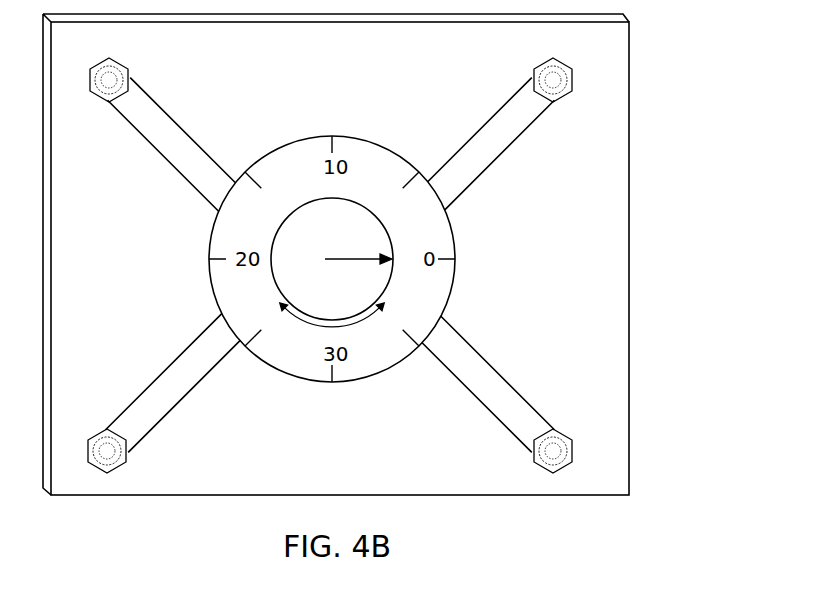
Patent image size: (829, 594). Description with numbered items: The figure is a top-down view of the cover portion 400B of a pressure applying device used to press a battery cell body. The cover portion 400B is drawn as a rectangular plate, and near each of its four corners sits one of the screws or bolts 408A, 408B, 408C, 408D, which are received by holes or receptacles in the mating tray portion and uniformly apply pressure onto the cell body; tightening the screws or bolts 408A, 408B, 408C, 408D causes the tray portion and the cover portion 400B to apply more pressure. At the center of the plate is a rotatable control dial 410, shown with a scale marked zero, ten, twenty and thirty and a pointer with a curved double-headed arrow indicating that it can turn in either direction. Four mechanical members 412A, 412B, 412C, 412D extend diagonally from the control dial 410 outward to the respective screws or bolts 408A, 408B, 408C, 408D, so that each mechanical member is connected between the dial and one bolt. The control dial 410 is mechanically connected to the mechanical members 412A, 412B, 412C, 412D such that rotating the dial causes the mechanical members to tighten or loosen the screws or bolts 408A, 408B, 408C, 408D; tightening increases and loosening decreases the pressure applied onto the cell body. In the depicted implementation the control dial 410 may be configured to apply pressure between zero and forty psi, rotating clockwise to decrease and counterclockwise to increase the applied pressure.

The cover portion 400B is at (629, 237).
The screw or bolt 408A is at (533, 72).
The screw or bolt 408B is at (552, 433).
The screw or bolt 408C is at (123, 463).
The screw or bolt 408D is at (130, 72).
The mechanical member 412A is at (517, 145).
The mechanical member 412B is at (485, 362).
The mechanical member 412C is at (193, 392).
The mechanical member 412D is at (178, 128).
The rotatable control dial 410 is at (310, 200).